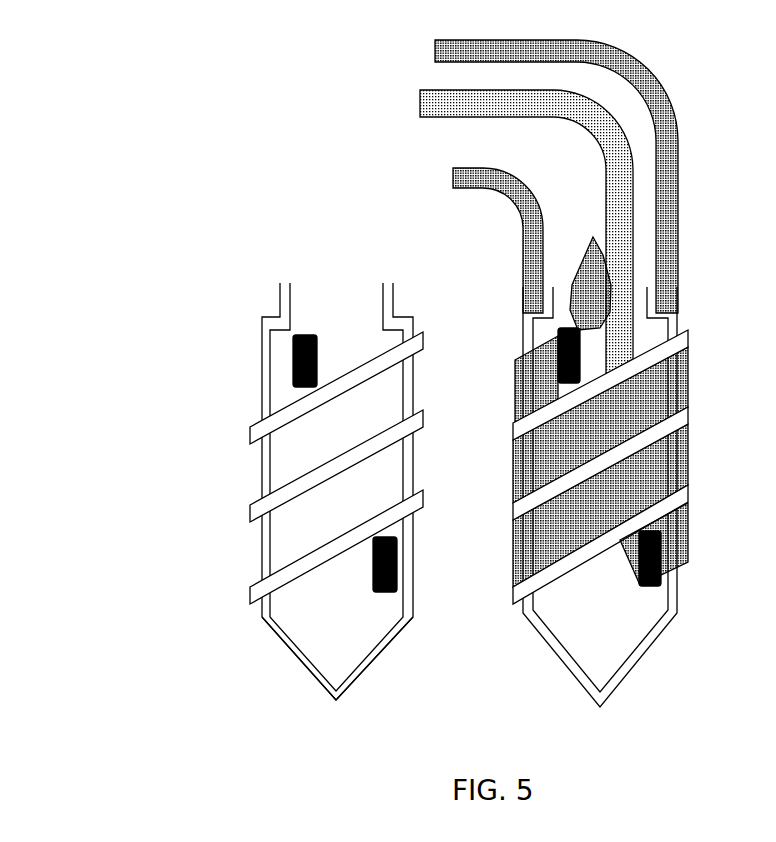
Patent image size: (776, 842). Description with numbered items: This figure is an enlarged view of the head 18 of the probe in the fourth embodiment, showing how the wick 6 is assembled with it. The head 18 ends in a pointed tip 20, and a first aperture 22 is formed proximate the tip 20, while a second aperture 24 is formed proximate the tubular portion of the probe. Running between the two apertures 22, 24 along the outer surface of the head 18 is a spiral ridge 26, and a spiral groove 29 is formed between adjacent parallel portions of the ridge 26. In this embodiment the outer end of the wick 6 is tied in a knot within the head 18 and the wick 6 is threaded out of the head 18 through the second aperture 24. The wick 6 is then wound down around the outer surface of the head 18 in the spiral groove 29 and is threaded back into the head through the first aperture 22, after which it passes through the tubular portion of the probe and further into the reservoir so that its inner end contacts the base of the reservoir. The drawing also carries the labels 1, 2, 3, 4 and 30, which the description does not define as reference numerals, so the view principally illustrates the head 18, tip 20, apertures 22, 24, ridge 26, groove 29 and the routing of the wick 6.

The inlet deflector / sensor 1 is at (584, 310).
The liquid region 2 is at (545, 393).
The outlet sensor 3 is at (667, 544).
The inlet pipe 4 is at (526, 232).
The wick 6 is at (647, 397).
The head 18 is at (265, 383).
The pointed tip 20 is at (336, 698).
The first aperture 22 is at (397, 566).
The second aperture 24 is at (293, 340).
The spiral ridge 26 is at (273, 503).
The spiral groove 29 is at (367, 492).
The outer pipe 30 is at (585, 292).